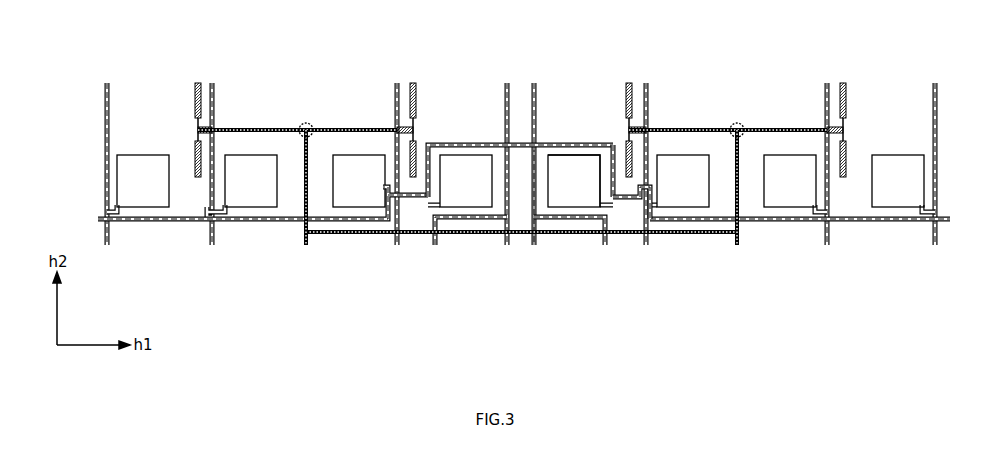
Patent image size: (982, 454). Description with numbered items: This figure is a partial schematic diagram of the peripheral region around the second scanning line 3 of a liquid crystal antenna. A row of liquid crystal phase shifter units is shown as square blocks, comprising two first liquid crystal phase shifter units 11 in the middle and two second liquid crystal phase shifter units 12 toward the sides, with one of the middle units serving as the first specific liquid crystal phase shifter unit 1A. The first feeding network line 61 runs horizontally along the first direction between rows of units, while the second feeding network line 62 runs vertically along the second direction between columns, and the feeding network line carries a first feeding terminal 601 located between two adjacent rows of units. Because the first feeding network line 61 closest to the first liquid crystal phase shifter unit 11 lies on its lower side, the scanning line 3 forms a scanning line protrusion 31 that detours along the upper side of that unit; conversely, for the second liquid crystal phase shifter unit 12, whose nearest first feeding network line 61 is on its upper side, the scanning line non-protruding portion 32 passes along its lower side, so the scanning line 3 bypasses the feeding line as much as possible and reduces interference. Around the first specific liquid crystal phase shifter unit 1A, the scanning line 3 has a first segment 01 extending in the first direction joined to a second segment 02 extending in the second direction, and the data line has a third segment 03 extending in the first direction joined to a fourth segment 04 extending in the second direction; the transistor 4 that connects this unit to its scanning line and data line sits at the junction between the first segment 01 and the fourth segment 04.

The scanning line 3 is at (110, 214).
The scanning line non-protruding portion 32 is at (342, 222).
The scanning line protrusion 31 is at (472, 145).
The transistor 4 is at (537, 150).
The fourth segment 04 is at (532, 168).
The first segment 01 is at (592, 143).
The second segment 02 is at (615, 185).
The third segment 03 is at (565, 220).
The first specific liquid crystal phase shifter unit 1A is at (578, 150).
The first liquid crystal phase shifter unit 11 is at (520, 181).
The second liquid crystal phase shifter unit 12 is at (520, 181).
The first feeding network line 61 is at (362, 128).
The second feeding network line 62 is at (645, 124).
The first feeding terminal 601 is at (307, 121).